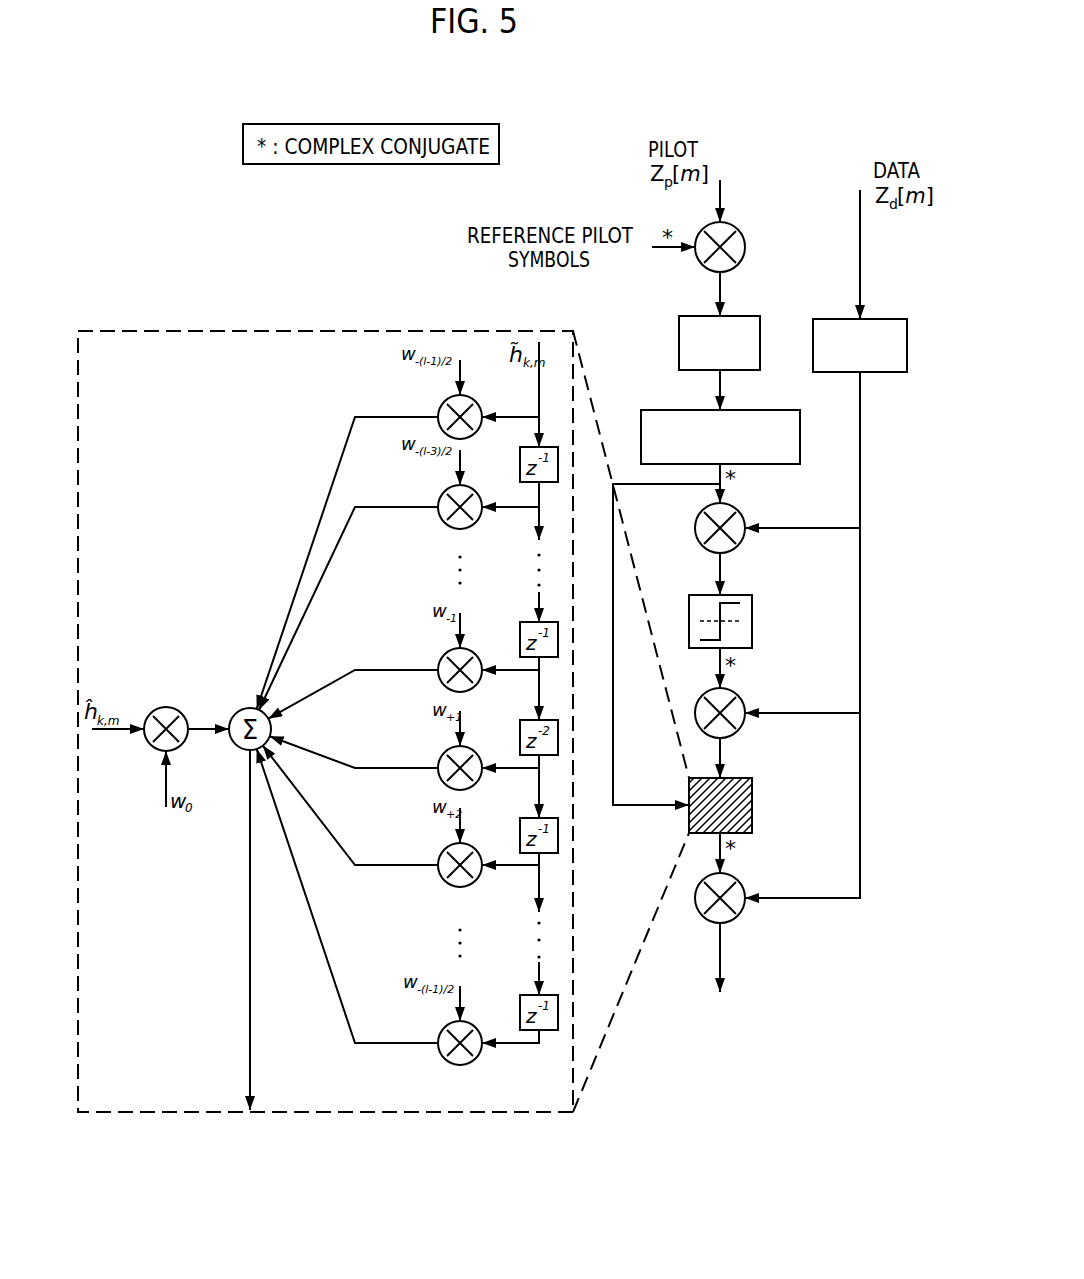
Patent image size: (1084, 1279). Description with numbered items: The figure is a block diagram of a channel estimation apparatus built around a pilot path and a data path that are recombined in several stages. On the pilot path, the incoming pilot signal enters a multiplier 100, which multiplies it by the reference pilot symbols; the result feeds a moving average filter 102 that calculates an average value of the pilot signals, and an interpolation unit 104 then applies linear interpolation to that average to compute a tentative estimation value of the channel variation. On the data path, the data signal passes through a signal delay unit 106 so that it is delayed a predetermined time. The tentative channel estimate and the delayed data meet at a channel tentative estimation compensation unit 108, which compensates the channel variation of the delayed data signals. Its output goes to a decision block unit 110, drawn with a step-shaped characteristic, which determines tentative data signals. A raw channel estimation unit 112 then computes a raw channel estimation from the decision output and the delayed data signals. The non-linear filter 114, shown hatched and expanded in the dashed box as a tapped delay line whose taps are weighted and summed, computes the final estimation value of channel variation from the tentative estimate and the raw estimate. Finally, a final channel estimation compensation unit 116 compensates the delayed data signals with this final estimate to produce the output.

The multiplier 100 is at (735, 229).
The moving average filter 102 is at (740, 316).
The interpolation unit 104 is at (753, 410).
The signal delay unit 106 is at (890, 319).
The channel tentative estimation compensation unit 108 is at (737, 510).
The decision block unit 110 is at (730, 595).
The raw channel estimation unit 112 is at (737, 697).
The non-linear filter 114 is at (735, 778).
The final channel estimation compensation unit 116 is at (735, 880).